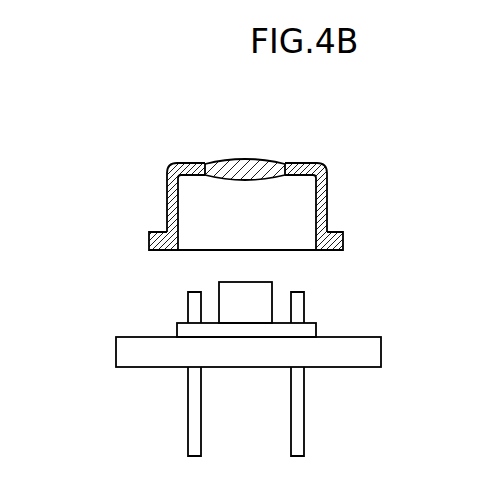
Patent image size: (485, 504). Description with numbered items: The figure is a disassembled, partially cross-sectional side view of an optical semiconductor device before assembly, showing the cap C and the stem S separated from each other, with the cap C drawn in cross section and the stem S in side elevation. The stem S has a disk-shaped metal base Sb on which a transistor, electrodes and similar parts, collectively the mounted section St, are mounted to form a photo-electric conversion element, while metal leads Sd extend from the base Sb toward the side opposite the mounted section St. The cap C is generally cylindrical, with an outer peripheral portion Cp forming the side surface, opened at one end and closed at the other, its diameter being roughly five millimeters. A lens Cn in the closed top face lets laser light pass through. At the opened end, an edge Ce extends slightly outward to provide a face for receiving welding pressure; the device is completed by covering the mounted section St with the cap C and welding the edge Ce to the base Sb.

The cap C is at (254, 182).
The outer peripheral portion Cp is at (327, 192).
The lens Cn is at (267, 162).
The edge Ce is at (343, 256).
The stem S is at (242, 378).
The base Sb is at (381, 351).
The mounted section St is at (272, 282).
The leads Sd is at (202, 455).